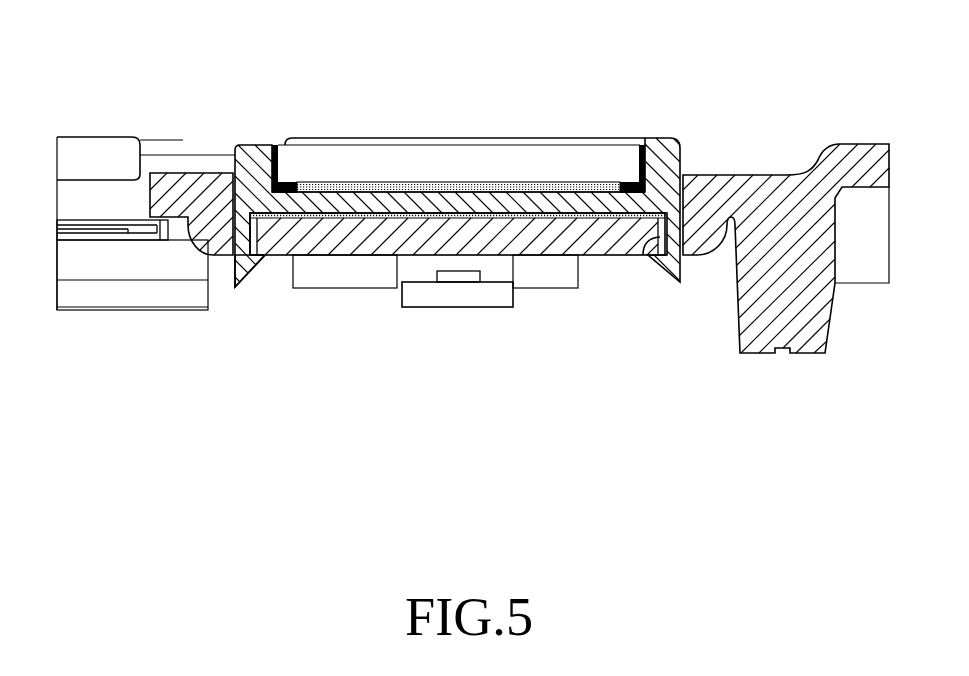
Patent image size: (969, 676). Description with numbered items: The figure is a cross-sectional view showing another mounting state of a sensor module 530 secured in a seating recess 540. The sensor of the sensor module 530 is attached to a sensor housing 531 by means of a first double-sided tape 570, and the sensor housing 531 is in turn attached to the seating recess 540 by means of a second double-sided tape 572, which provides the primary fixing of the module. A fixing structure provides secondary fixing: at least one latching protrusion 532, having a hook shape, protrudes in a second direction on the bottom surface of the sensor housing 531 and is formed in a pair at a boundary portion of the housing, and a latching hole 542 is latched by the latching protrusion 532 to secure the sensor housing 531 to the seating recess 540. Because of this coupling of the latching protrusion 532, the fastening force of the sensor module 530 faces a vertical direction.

The sensor module 530 is at (466, 122).
The sensor housing 531 is at (258, 163).
The latching protrusion 532 is at (242, 270).
The seating recess 540 is at (602, 218).
The latching hole 542 is at (643, 255).
The first double-sided tape 570 is at (577, 190).
The second double-sided tape 572 is at (493, 216).